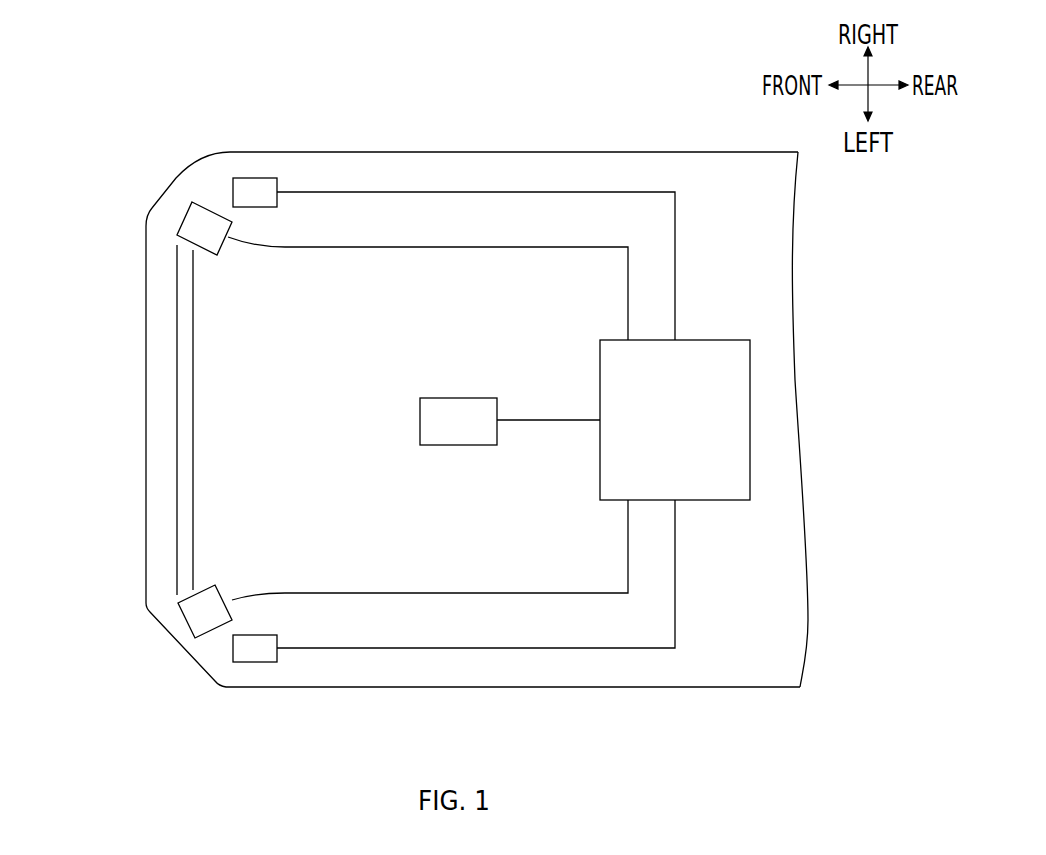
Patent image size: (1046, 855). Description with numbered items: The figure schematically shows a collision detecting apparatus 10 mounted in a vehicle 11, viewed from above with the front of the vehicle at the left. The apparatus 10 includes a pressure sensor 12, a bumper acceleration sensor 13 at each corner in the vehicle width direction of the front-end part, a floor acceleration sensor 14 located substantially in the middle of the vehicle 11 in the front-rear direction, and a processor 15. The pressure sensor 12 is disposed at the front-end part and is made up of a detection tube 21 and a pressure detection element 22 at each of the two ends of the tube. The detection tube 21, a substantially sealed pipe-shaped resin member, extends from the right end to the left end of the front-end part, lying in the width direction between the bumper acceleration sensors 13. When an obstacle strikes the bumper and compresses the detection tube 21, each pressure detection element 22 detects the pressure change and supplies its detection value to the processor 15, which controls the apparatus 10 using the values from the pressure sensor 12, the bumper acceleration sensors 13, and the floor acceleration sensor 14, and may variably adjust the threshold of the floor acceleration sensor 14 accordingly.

The collision detecting apparatus 10 is at (472, 75).
The vehicle 11 is at (645, 150).
The pressure sensor 12 is at (83, 342).
The bumper acceleration sensor 13 is at (264, 178).
The floor acceleration sensor 14 is at (455, 397).
The processor 15 is at (750, 420).
The detection tube 21 is at (177, 415).
The pressure detection element 22 is at (185, 226).